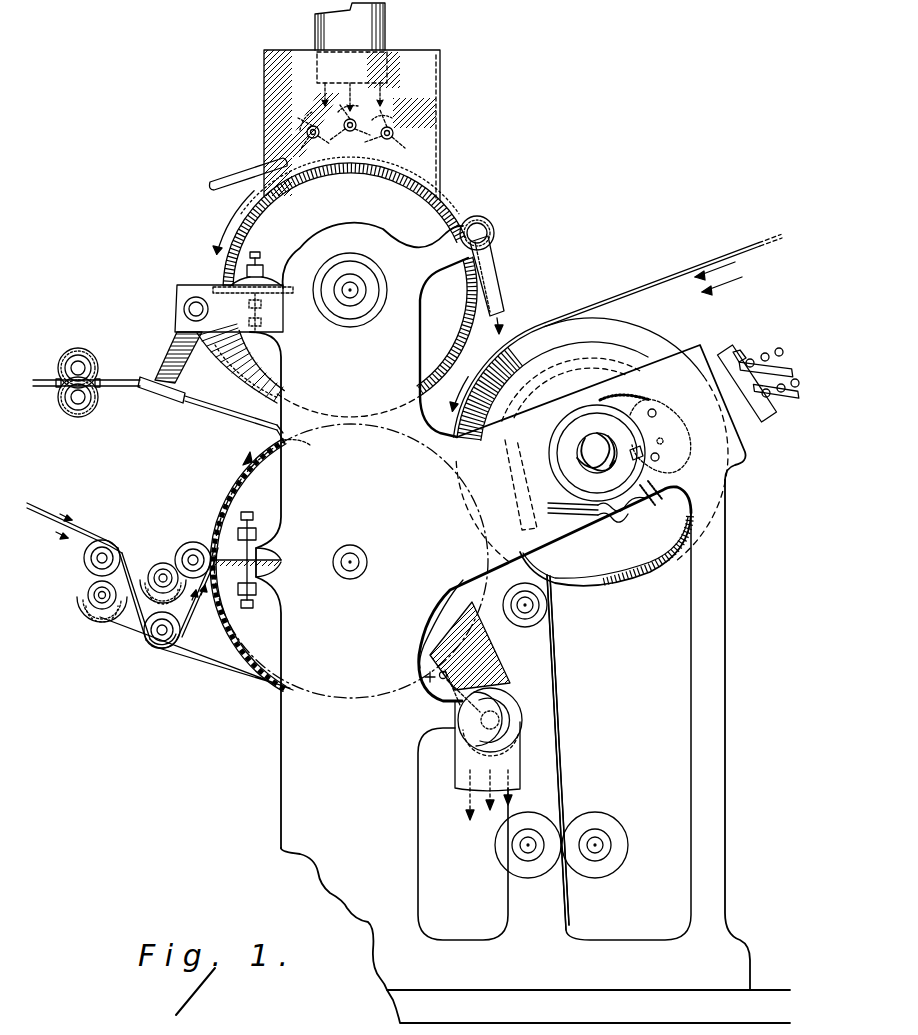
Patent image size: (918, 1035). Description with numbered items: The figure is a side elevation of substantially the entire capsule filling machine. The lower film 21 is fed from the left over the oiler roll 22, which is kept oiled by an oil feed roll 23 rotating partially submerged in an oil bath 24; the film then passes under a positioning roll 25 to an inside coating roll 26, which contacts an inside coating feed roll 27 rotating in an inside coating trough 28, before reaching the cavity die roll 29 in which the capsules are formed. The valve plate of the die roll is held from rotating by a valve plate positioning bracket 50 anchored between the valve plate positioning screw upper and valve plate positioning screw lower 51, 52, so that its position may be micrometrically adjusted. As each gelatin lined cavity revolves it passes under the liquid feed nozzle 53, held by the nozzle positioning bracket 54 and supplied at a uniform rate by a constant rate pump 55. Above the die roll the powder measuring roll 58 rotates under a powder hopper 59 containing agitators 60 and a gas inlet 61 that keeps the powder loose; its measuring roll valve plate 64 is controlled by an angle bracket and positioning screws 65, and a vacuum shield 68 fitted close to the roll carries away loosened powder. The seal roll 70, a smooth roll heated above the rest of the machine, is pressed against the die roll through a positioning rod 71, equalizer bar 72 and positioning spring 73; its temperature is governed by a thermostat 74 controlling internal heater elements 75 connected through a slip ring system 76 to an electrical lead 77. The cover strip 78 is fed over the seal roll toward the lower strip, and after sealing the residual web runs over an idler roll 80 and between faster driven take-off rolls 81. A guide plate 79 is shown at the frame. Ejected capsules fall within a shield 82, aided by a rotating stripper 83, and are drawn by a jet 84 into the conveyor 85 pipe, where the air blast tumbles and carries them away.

The lower film 21 is at (86, 541).
The oiler roll 22 is at (84, 559).
The oil feed roll 23 is at (77, 588).
The oil bath 24 is at (97, 615).
The positioning roll 25 is at (152, 647).
The inside coating roll 26 is at (193, 542).
The inside coating feed roll 27 is at (153, 563).
The inside coating trough 28 is at (140, 618).
The cavity die roll 29 is at (248, 652).
The valve plate positioning bracket 50 is at (277, 280).
The valve plate positioning screw upper 51 is at (256, 537).
The valve plate positioning screw lower 52 is at (257, 588).
The liquid feed nozzle 53 is at (277, 432).
The nozzle positioning bracket 54 is at (167, 400).
The pump 55 is at (83, 348).
The powder measuring roll 58 is at (473, 220).
The powder hopper 59 is at (440, 140).
The agitators 60 is at (398, 123).
The gas inlet 61 is at (220, 183).
The measuring roll valve plate 64 is at (430, 213).
The angle bracket and positioning screws 65 is at (262, 322).
The vacuum shield 68 is at (497, 230).
The seal roll 70 is at (653, 335).
The positioning rod 71 is at (721, 352).
The equalizer bar 72 is at (742, 353).
The positioning spring 73 is at (773, 393).
The thermostat 74 is at (510, 503).
The internal heater elements 75 is at (653, 400).
The slip ring system 76 is at (572, 430).
The electrical lead 77 is at (597, 518).
The cover strip 78 is at (683, 275).
The guide plate 79 is at (561, 690).
The idler roll 80 is at (547, 605).
The take-off rolls 81 is at (507, 862).
The shield 82 is at (495, 658).
The rotating stripper 83 is at (433, 695).
The jet 84 is at (487, 718).
The conveyor 85 is at (503, 690).